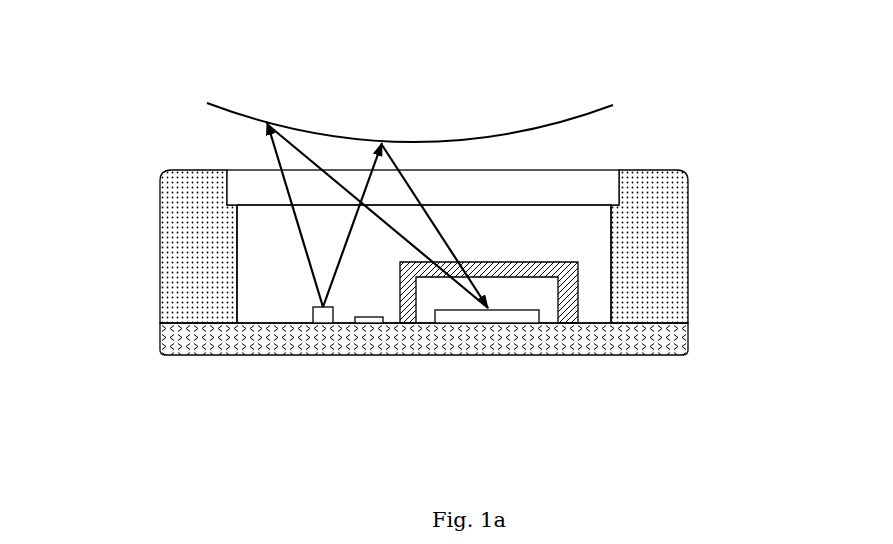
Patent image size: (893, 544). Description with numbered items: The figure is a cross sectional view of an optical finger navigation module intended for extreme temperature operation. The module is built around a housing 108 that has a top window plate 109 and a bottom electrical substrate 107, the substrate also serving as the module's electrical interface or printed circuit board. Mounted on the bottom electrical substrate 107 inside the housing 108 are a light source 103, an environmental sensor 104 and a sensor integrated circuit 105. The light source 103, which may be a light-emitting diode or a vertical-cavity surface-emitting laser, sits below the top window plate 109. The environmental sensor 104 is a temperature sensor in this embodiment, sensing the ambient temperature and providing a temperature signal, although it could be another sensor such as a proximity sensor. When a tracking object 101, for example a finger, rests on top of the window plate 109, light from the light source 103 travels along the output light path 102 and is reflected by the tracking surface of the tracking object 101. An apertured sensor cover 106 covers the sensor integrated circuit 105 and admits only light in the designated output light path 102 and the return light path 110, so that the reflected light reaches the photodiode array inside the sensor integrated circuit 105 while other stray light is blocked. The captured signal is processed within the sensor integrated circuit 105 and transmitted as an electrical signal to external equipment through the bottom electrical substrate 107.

The tracking object 101 is at (191, 40).
The output light path 102 is at (64, 162).
The light source 103 is at (182, 454).
The environmental sensor 104 is at (301, 454).
The sensor integrated circuit 105 is at (442, 470).
The apertured sensor cover 106 is at (646, 470).
The bottom electrical substrate 107 is at (812, 400).
The housing 108 is at (872, 184).
The top window plate 109 is at (802, 72).
The return light path 110 is at (594, 50).